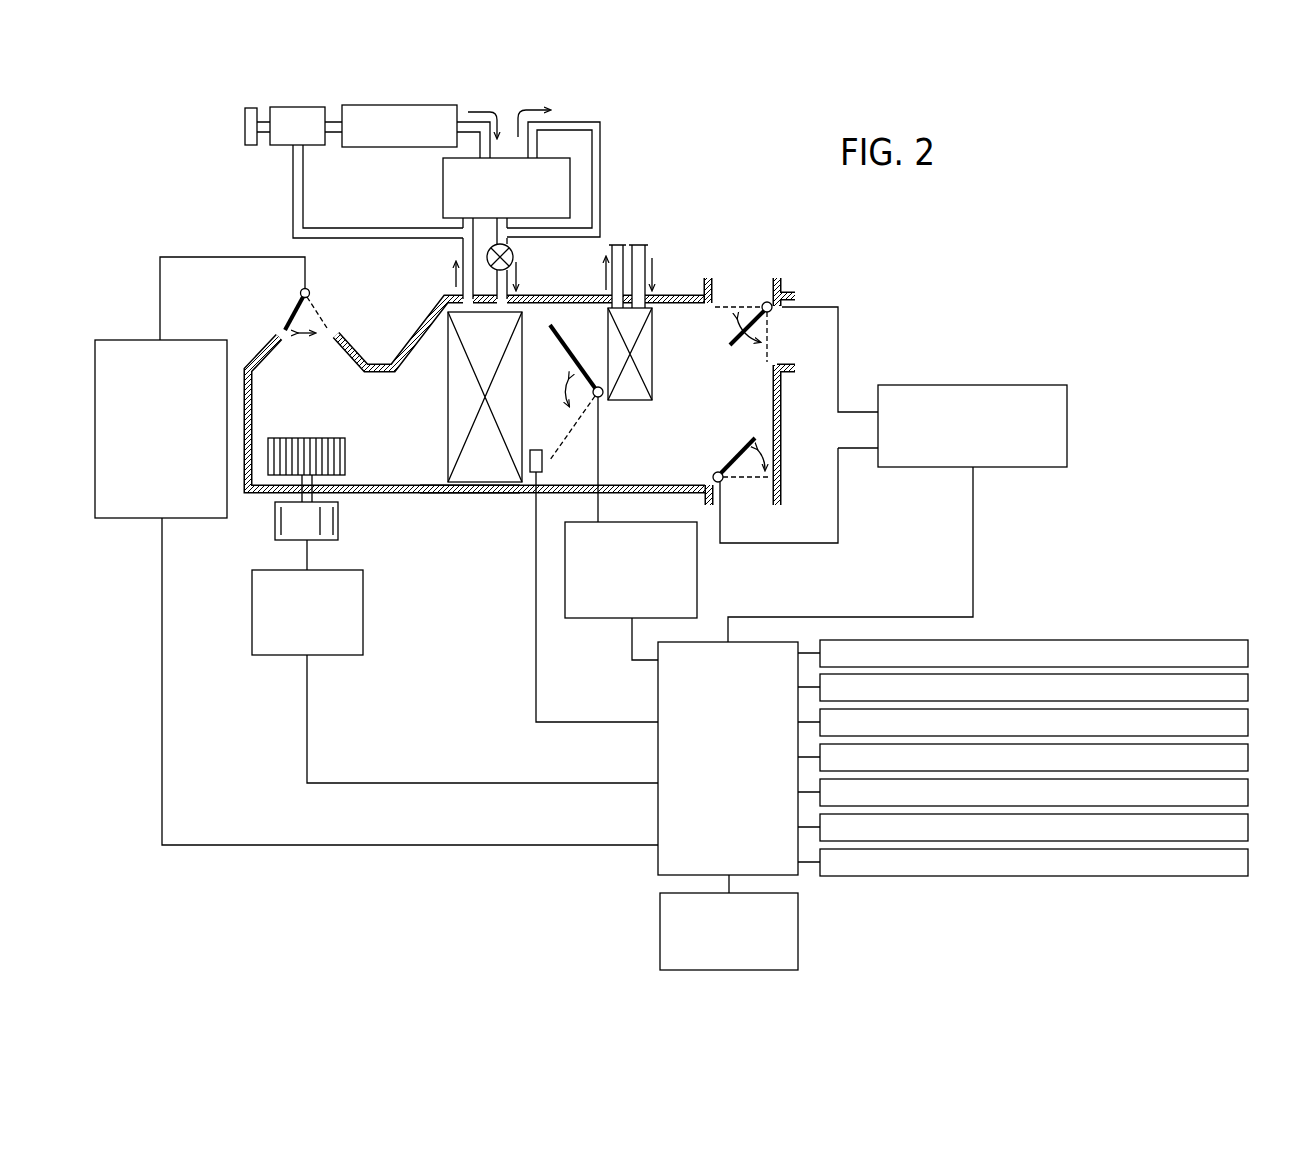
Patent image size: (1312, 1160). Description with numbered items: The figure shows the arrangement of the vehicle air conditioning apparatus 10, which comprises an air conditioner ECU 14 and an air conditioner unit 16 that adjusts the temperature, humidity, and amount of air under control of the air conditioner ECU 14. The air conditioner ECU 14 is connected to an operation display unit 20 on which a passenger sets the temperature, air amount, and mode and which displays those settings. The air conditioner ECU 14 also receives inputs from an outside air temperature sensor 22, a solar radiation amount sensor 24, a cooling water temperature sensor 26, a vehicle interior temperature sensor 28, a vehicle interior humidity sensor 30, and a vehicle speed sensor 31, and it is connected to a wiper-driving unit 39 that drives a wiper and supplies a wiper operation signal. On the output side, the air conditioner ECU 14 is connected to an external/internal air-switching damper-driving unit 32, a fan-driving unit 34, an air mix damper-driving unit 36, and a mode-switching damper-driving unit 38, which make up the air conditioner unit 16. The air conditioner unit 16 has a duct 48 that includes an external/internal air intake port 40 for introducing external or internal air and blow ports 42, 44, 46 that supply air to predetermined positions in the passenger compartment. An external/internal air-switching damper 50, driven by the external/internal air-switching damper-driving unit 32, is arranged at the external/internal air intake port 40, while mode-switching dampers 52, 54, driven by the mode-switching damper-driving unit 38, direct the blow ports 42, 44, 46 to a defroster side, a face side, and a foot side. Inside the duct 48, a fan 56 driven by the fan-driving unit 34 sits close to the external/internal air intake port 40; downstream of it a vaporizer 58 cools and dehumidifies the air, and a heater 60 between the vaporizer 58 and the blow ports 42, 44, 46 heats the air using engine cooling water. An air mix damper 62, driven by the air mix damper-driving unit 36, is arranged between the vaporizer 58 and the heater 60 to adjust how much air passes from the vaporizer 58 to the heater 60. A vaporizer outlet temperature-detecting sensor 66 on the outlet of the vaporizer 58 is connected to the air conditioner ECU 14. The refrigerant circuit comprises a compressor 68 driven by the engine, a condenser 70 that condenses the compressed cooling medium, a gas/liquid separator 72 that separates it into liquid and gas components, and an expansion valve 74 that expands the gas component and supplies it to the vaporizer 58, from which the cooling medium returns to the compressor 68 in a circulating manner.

The vehicle air conditioning apparatus 10 is at (1044, 248).
The air conditioner ECU 14 is at (658, 693).
The air conditioner unit 16 is at (218, 228).
The operation display unit 20 is at (800, 910).
The outside air temperature sensor 22 is at (1250, 655).
The solar radiation amount sensor 24 is at (1250, 689).
The cooling water temperature sensor 26 is at (1250, 724).
The vehicle interior temperature sensor 28 is at (1250, 759).
The vehicle interior humidity sensor 30 is at (1250, 794).
The vehicle speed sensor 31 is at (1250, 829).
The external/internal air-switching damper-driving unit 32 is at (202, 339).
The fan-driving unit 34 is at (343, 657).
The air mix damper-driving unit 36 is at (593, 620).
The mode-switching damper-driving unit 38 is at (1043, 384).
The wiper-driving unit 39 is at (1250, 864).
The external/internal air intake port 40 is at (307, 344).
The blow port 42 is at (743, 294).
The blow port 44 is at (780, 333).
The blow port 46 is at (748, 495).
The duct 48 is at (480, 495).
The external/internal air-switching damper 50 is at (294, 318).
The mode-switching damper 52 is at (734, 339).
The mode-switching damper 54 is at (742, 442).
The fan 56 is at (311, 438).
The vaporizer 58 is at (450, 401).
The heater 60 is at (653, 355).
The air mix damper 62 is at (574, 351).
The vaporizer outlet temperature-detecting sensor 66 is at (534, 450).
The compressor 68 is at (318, 148).
The condenser 70 is at (367, 148).
The gas/liquid separator 72 is at (443, 201).
The expansion valve 74 is at (513, 257).